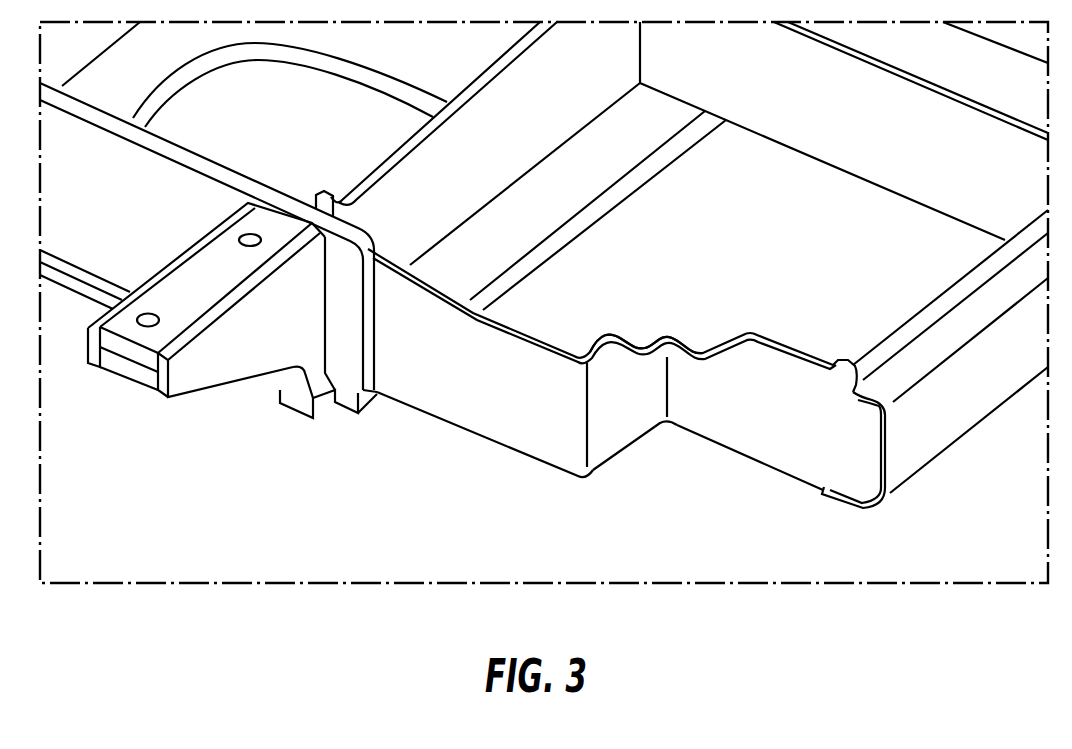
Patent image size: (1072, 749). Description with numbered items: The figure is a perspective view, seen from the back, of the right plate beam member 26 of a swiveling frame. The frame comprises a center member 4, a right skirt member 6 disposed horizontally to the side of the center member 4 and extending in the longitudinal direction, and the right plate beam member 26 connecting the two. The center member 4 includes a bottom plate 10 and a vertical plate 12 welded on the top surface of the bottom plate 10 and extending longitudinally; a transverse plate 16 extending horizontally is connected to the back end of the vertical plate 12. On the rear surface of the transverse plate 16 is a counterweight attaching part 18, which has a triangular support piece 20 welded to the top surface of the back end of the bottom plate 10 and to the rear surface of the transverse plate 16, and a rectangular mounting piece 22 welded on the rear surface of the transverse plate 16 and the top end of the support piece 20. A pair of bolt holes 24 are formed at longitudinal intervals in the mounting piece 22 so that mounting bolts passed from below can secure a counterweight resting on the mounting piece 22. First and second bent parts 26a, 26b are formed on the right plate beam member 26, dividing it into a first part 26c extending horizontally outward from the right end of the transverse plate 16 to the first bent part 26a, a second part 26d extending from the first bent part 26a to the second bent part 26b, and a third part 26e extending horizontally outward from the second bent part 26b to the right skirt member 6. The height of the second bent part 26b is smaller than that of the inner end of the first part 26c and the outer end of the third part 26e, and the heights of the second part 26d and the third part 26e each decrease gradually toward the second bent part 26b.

The center member 4 is at (652, 182).
The skirt member 6 is at (913, 450).
The bottom plate 10 is at (600, 207).
The vertical plate 12 is at (520, 228).
The transverse plate 16 is at (177, 187).
The counterweight attaching part 18 is at (91, 366).
The support piece 20 is at (113, 360).
The mounting piece 22 is at (193, 340).
The bolt hole 24 is at (246, 238).
The right plate beam member 26 is at (582, 401).
The first bent part 26a is at (593, 467).
The second bent part 26b is at (667, 387).
The first part 26c is at (507, 422).
The second part 26d is at (620, 427).
The third part 26e is at (775, 422).